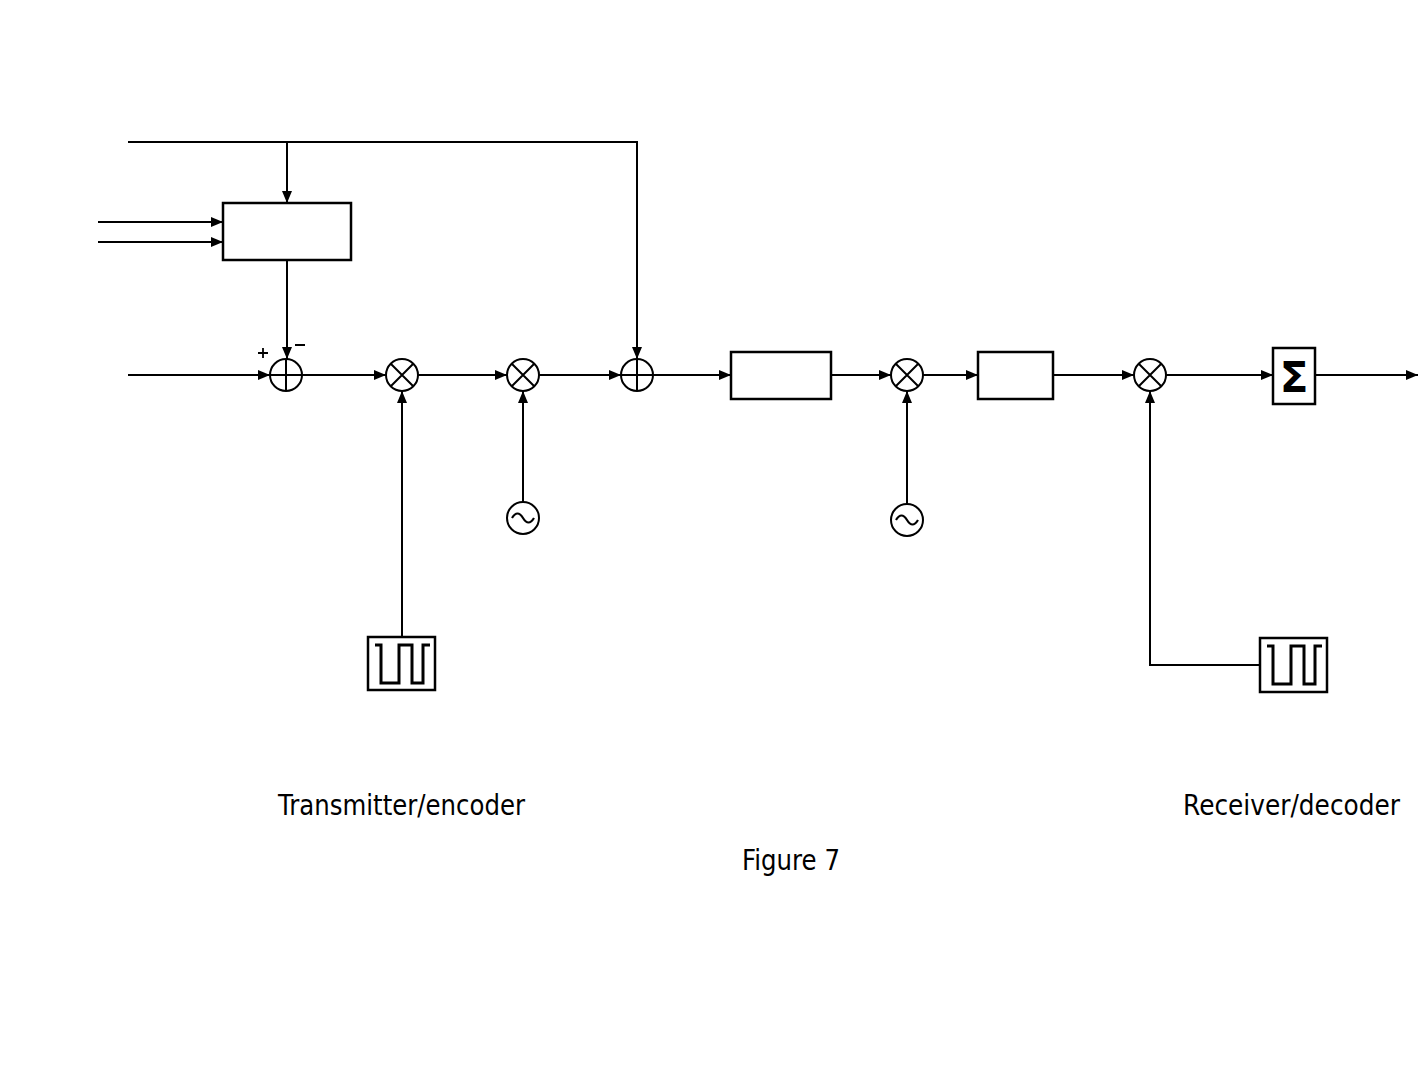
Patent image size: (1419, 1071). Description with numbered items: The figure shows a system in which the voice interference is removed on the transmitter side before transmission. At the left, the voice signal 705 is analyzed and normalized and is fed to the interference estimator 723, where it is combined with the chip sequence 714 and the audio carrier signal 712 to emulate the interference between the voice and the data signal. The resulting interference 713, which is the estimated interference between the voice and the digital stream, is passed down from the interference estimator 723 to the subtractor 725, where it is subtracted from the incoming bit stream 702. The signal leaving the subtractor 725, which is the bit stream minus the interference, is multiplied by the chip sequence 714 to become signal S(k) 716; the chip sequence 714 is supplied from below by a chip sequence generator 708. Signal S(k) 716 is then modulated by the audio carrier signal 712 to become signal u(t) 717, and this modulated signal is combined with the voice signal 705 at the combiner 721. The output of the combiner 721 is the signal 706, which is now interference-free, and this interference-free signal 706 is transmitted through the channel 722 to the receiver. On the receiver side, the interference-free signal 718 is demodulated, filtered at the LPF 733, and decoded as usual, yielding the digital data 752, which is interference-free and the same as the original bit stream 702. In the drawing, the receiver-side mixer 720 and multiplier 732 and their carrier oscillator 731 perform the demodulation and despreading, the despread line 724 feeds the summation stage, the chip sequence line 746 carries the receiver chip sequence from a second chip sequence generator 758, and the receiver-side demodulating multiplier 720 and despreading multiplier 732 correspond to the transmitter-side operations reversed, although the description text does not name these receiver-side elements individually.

The bit stream 702 is at (205, 378).
The voice signal 705 is at (353, 103).
The interference-free signal 706 is at (688, 372).
The chip sequence generator 708 is at (392, 637).
The audio carrier signal 712 is at (166, 218).
The resulting interference 713 is at (287, 298).
The chip sequence 714 is at (165, 247).
The signal S(k) 716 is at (443, 365).
The signal u(t) 717 is at (552, 368).
The interference-free signal at receiver 718 is at (1095, 335).
The first multiplier (spreader) 720 is at (412, 390).
The combiner 721 is at (645, 390).
The channel 722 is at (789, 352).
The interference estimator 723 is at (322, 203).
The despread signal line 724 is at (1183, 375).
The subtractor 725 is at (288, 391).
The receiver carrier oscillator Fc 731 is at (907, 468).
The receiver multiplier (despreader) 732 is at (1160, 390).
The LPF 733 is at (1000, 352).
The receiver chip sequence line 746 is at (1150, 545).
The digital data 752 is at (1333, 375).
The receiver chip sequence generator 758 is at (1293, 638).